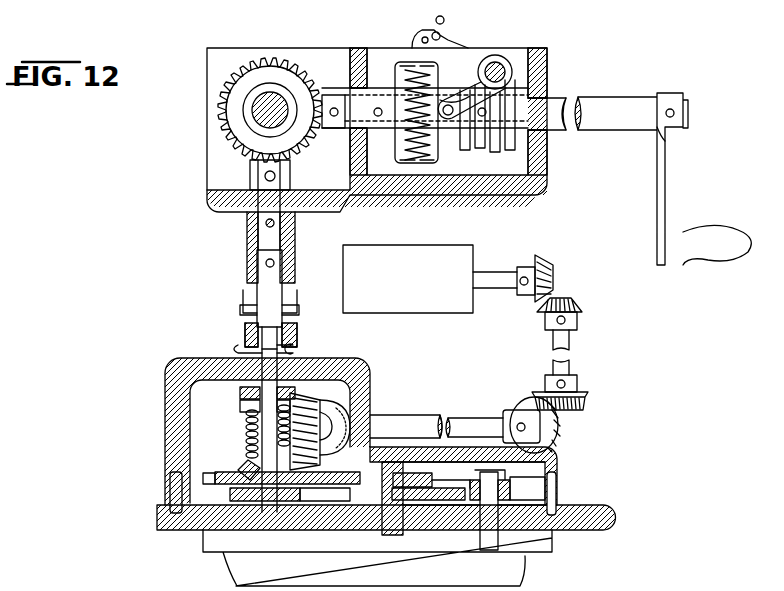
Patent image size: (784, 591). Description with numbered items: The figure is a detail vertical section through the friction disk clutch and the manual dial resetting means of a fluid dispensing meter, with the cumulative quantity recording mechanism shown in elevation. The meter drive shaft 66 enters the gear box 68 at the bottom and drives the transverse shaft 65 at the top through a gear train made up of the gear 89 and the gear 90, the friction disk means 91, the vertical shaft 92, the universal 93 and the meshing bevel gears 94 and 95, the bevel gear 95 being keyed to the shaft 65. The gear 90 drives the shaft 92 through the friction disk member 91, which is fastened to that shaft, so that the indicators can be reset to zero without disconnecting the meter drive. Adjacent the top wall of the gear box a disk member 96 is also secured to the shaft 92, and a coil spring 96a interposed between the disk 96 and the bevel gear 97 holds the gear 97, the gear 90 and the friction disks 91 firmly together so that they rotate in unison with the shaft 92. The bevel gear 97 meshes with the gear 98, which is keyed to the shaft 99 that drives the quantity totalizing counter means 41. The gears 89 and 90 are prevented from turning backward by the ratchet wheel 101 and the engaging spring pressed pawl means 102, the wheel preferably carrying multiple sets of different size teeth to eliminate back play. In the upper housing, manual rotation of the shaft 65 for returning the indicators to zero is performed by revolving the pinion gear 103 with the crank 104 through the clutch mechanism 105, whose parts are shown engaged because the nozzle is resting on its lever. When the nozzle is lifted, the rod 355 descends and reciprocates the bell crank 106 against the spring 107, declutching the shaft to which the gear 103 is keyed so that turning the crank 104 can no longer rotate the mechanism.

The bevel gear 95 is at (243, 90).
The transverse shaft 65 is at (262, 110).
The pinion gear 103 is at (302, 90).
The bevel gear 94 is at (296, 160).
The clutch mechanism 105 is at (405, 76).
The rod 355 is at (431, 40).
The bell crank 106 is at (476, 73).
The spring 107 is at (490, 151).
The crank 104 is at (670, 228).
The quantity totalizing counter means 41 is at (446, 251).
The universal 93 is at (272, 292).
The shaft 92 is at (272, 378).
The gear box 68 is at (180, 439).
The disk member 96 is at (242, 392).
The coil spring 96a is at (242, 414).
The gear 98 is at (312, 403).
The bevel gear 97 is at (245, 459).
The gear 90 is at (212, 473).
The friction disk means 91 is at (235, 493).
The meter drive shaft 66 is at (344, 564).
The shaft 99 is at (405, 420).
The gear 89 is at (421, 476).
The spring pressed pawl means 102 is at (540, 480).
The ratchet wheel 101 is at (438, 495).